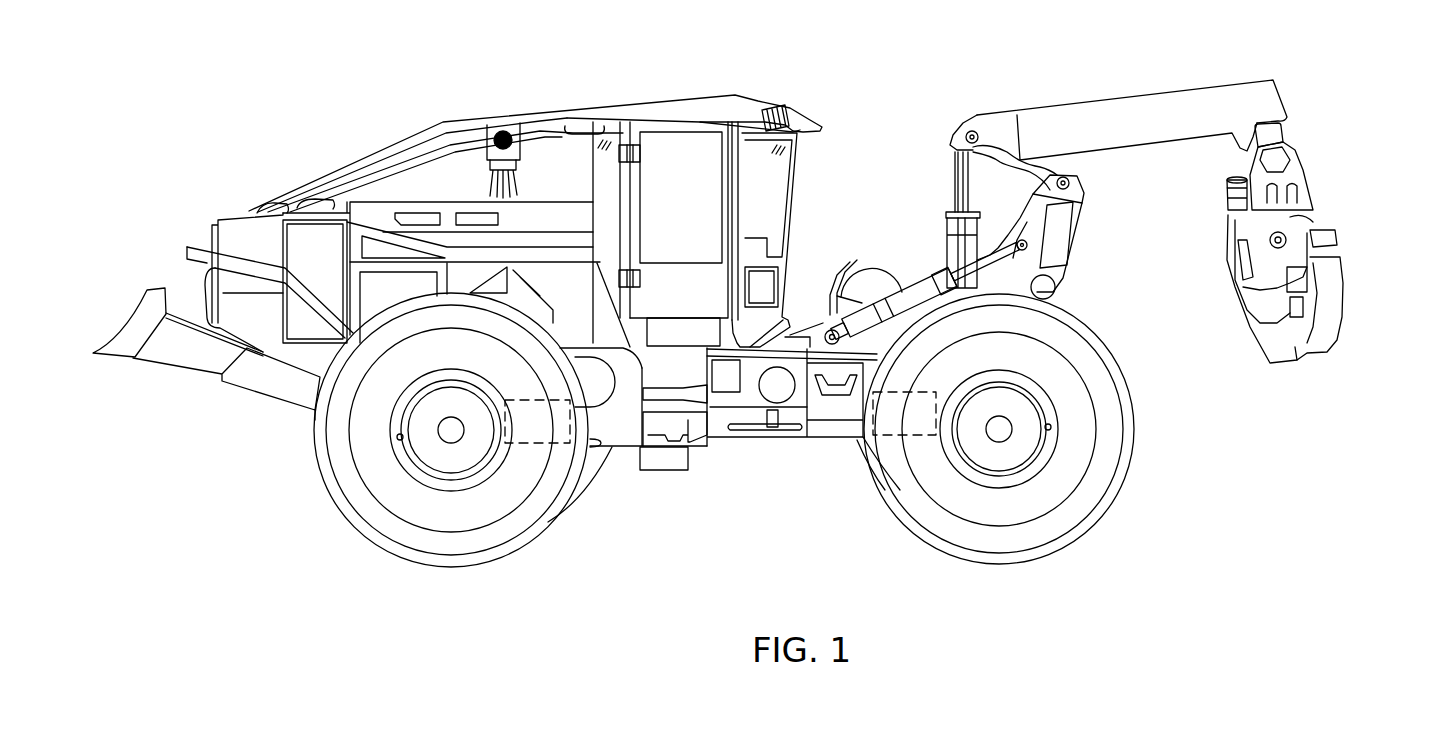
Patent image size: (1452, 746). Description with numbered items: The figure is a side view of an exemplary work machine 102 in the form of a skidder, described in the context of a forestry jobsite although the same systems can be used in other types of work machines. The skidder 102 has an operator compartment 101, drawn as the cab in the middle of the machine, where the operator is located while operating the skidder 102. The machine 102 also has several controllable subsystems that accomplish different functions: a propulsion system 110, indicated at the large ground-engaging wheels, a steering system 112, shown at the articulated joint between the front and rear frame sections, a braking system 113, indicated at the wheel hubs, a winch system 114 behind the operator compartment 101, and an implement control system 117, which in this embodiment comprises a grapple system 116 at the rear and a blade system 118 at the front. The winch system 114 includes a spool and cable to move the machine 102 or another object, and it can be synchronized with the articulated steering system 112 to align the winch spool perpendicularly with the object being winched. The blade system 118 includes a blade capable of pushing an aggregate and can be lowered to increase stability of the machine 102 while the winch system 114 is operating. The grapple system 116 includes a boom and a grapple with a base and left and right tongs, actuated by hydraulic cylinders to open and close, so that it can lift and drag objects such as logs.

The operator compartment 101 is at (678, 130).
The work machine 102 is at (313, 138).
The propulsion system 110 is at (535, 546).
The steering system 112 is at (750, 439).
The braking system 113 is at (720, 417).
The winch system 114 is at (884, 259).
The grapple system 116 is at (1326, 204).
The implement control system 117 is at (212, 315).
The blade system 118 is at (128, 326).